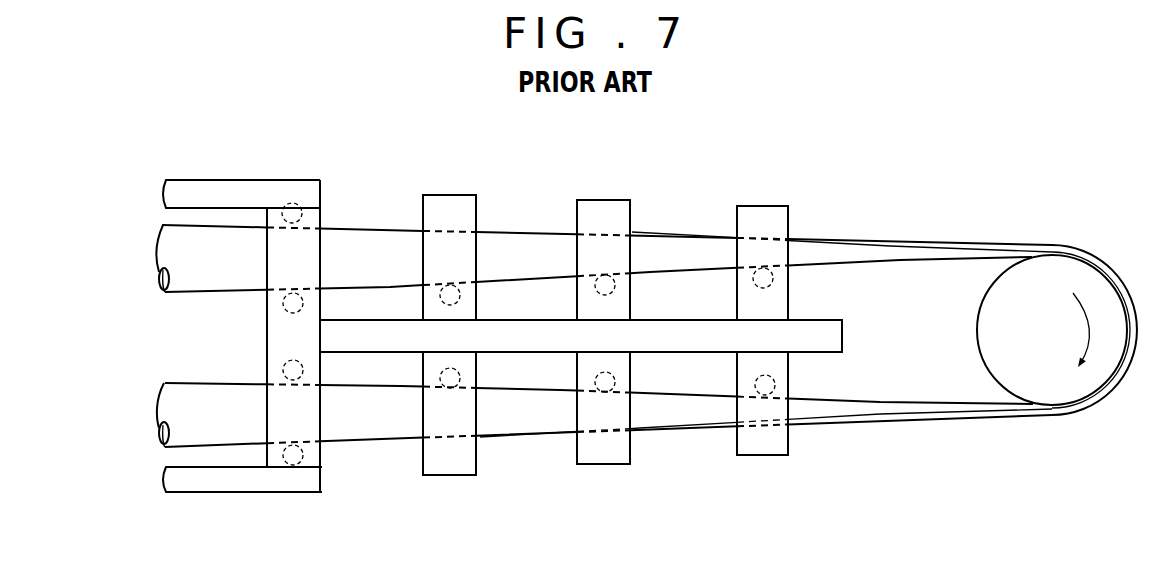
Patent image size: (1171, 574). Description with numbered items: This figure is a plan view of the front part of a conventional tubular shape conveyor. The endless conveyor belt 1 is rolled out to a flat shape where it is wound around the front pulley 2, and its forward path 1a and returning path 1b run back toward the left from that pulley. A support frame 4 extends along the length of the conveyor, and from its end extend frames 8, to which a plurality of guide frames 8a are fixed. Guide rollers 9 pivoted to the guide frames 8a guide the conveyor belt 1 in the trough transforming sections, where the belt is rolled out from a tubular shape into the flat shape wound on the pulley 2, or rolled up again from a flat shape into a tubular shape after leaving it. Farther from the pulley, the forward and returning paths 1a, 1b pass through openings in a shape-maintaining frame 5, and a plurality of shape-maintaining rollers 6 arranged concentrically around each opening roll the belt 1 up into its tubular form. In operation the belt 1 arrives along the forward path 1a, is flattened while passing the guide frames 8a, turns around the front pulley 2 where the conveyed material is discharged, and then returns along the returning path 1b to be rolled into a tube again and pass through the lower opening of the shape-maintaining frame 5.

The conveyor belt 1 is at (646, 314).
The forward path 1a is at (852, 238).
The returning path 1b is at (850, 425).
The pulley 2 is at (1118, 322).
The support frame 4 is at (237, 178).
The shape-maintaining frame 5 is at (320, 248).
The shape-maintaining roller 6 is at (293, 203).
The frame 8 is at (607, 333).
The guide frame 8a is at (454, 195).
The guide roller 9 is at (460, 296).